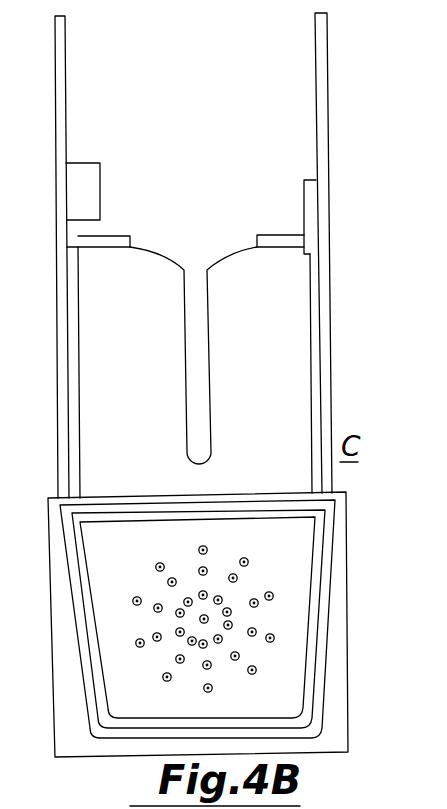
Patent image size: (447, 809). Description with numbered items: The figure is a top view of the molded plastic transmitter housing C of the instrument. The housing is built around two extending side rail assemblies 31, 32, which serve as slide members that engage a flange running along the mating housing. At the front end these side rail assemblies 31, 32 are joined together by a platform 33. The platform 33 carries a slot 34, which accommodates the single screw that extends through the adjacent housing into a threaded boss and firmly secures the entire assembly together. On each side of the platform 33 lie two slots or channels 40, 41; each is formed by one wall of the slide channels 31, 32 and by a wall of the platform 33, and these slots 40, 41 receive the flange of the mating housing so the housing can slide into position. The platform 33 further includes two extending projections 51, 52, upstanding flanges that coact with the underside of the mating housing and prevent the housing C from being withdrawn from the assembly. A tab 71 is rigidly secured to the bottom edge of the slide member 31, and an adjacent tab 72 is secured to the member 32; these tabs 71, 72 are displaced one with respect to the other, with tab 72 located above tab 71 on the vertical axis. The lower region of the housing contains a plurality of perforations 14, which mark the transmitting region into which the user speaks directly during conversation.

The perforations 14 is at (263, 654).
The side rail assembly 31 is at (315, 47).
The side rail assembly 32 is at (62, 70).
The platform 33 is at (293, 352).
The slot 34 is at (200, 320).
The slot 40 is at (318, 408).
The slot 41 is at (72, 390).
The projection 51 is at (273, 233).
The projection 52 is at (113, 234).
The tab 71 is at (303, 188).
The tab 72 is at (88, 163).